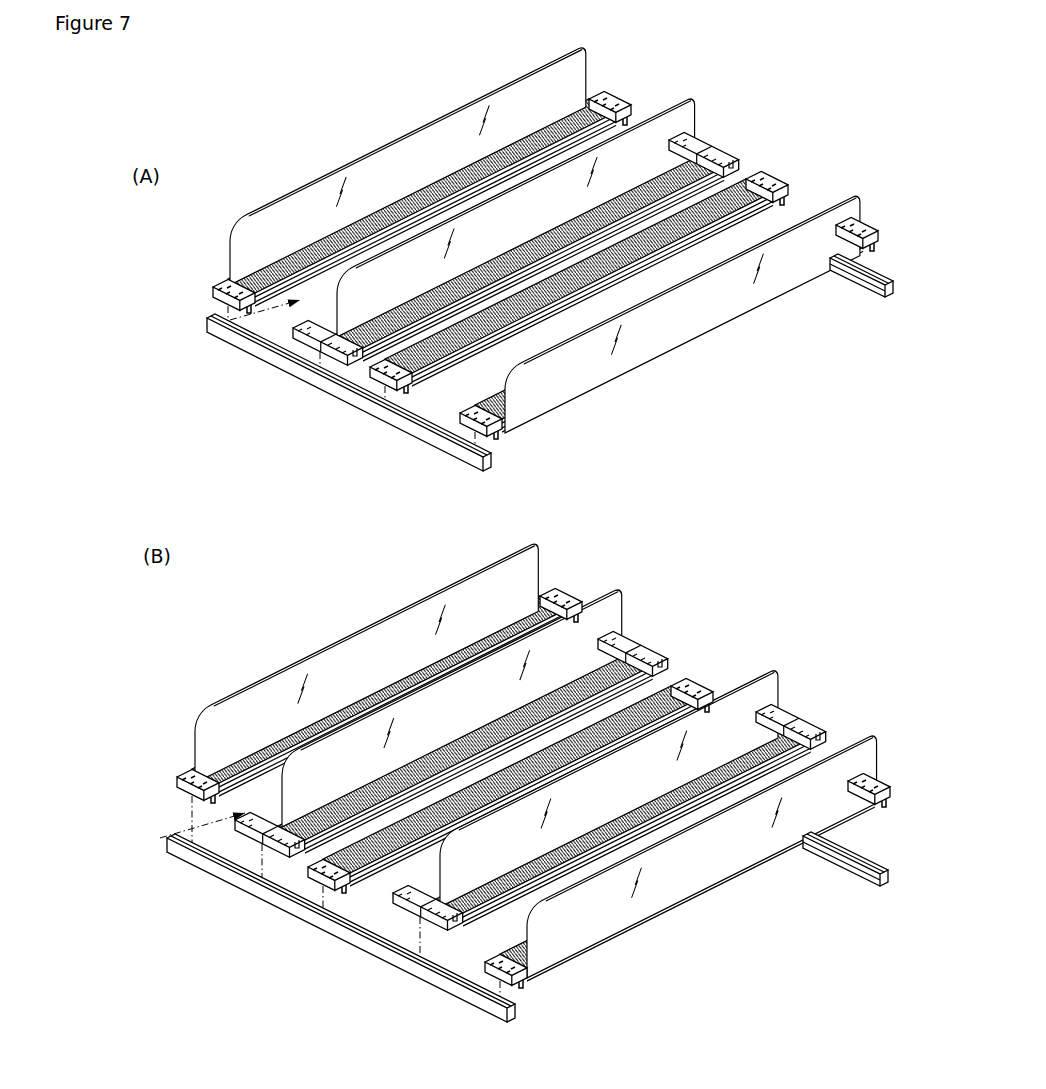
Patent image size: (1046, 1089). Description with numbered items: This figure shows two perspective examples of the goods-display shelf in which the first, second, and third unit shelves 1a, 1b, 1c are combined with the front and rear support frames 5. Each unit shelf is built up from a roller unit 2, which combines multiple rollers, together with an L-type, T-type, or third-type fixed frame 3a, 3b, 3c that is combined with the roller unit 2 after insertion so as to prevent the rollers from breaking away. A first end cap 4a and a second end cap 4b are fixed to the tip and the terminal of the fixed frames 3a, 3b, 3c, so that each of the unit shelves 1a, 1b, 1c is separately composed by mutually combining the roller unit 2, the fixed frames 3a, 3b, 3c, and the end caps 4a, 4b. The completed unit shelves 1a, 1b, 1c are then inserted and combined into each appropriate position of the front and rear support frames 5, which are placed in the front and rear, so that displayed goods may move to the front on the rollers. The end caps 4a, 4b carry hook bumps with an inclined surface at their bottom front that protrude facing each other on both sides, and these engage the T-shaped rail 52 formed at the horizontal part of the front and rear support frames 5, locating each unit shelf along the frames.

The No.1 unit shelf 1a is at (296, 171).
The No.2 unit shelf 1b is at (208, 330).
The No.3 unit shelf 1c is at (428, 401).
The roller unit 2 is at (584, 113).
The L-type fixed frame 3a is at (336, 268).
The T-type fixed frame 3b is at (363, 358).
The fixed frame 3c is at (440, 370).
The No.1 end cap 4a is at (614, 103).
The No.2 end cap 4b is at (705, 146).
The front and rear support frame 5 is at (501, 450).
The T-shaped rail 52 is at (501, 460).